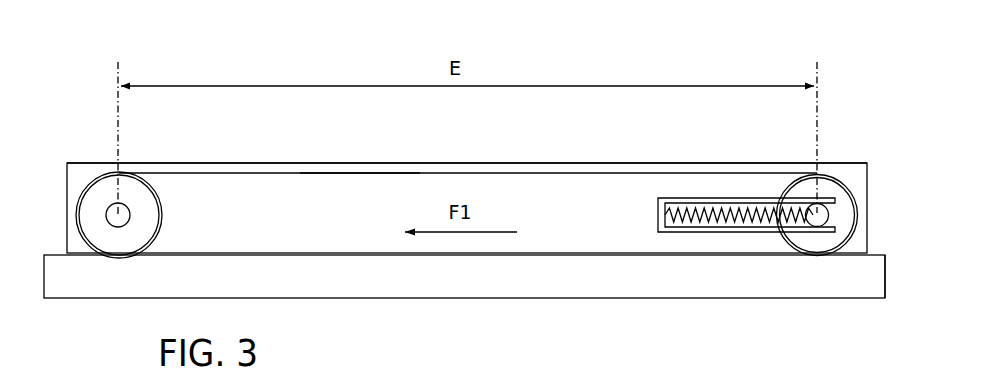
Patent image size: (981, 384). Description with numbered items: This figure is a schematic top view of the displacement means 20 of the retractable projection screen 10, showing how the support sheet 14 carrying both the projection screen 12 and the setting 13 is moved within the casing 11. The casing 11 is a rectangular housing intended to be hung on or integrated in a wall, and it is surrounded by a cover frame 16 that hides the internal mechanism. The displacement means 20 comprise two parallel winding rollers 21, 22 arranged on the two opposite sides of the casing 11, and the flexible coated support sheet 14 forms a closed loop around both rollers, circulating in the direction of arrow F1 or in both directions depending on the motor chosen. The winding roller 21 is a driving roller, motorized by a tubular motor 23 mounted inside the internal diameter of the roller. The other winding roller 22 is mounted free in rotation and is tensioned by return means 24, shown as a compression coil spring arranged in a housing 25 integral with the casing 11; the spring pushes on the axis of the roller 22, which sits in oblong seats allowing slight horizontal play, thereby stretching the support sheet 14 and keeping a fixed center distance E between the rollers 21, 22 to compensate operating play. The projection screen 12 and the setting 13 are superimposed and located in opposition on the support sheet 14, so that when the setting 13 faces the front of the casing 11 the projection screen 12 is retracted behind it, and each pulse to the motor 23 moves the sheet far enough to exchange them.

The retractable projection screen 10 is at (188, 133).
The casing 11 is at (208, 163).
The projection screen 12 is at (532, 172).
The setting 13 is at (542, 258).
The support sheet 14 is at (355, 175).
The cover frame 16 is at (878, 300).
The displacement means 20 is at (97, 177).
The driving winding roller 21 is at (103, 238).
The free winding roller 22 is at (807, 245).
The tubular motor 23 is at (132, 213).
The return means 24 is at (733, 212).
The housing 25 is at (683, 232).